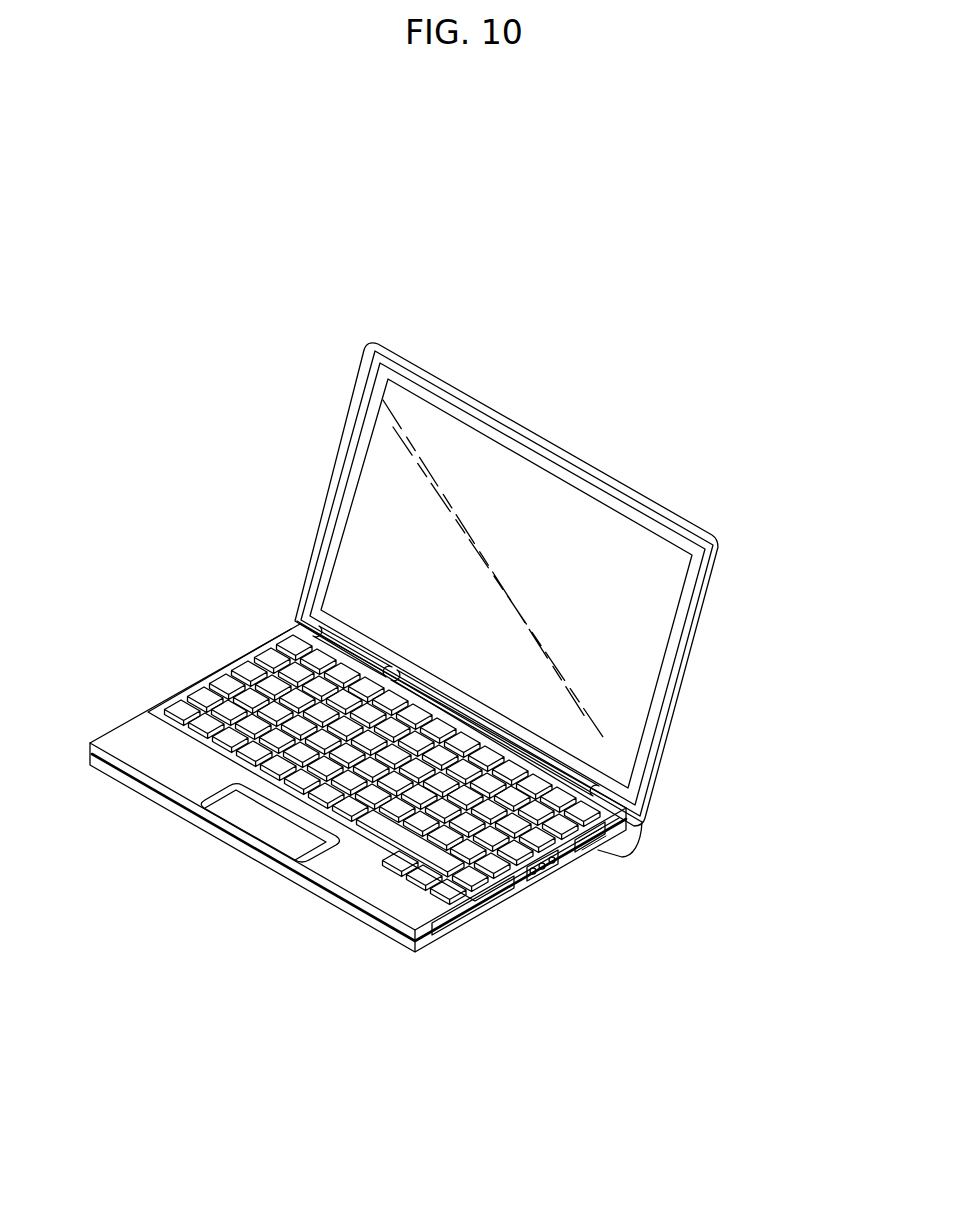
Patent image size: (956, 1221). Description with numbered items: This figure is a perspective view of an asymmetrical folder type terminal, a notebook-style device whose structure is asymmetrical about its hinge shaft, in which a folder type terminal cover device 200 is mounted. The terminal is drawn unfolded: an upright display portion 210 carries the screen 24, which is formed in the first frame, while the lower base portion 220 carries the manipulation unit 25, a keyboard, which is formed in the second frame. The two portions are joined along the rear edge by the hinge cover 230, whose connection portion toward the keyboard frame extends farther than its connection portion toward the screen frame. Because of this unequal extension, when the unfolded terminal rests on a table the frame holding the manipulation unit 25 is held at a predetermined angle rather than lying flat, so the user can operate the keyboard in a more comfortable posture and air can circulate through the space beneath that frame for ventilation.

The folder type terminal cover device 200 is at (425, 708).
The display housing 210 is at (507, 685).
The main body housing 220 is at (538, 934).
The hinge cover 230 is at (642, 870).
The screen 24 is at (362, 478).
The manipulation unit 25 is at (199, 697).